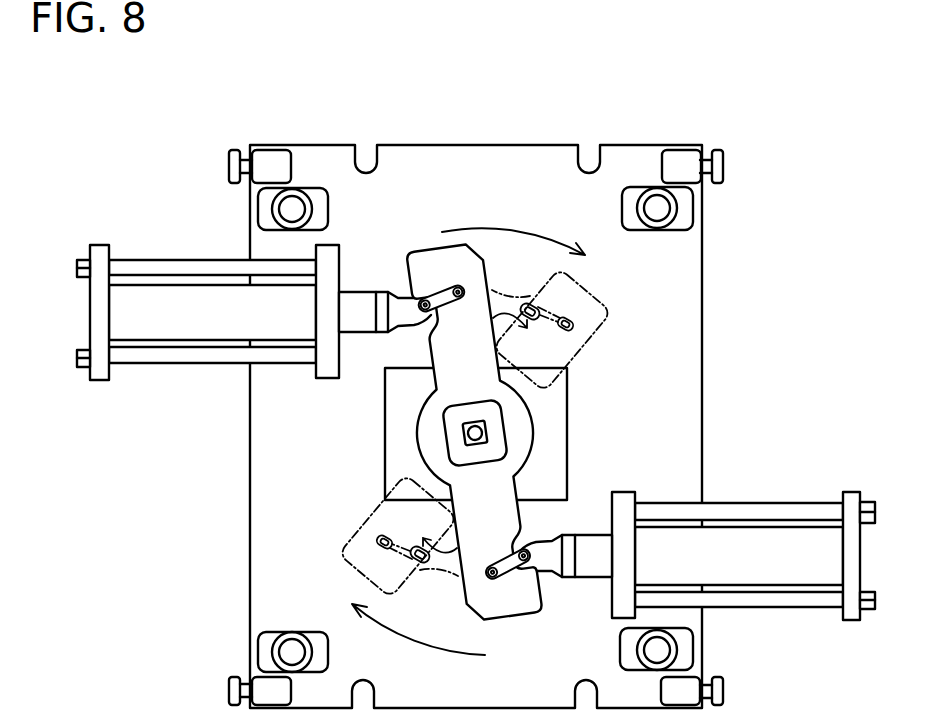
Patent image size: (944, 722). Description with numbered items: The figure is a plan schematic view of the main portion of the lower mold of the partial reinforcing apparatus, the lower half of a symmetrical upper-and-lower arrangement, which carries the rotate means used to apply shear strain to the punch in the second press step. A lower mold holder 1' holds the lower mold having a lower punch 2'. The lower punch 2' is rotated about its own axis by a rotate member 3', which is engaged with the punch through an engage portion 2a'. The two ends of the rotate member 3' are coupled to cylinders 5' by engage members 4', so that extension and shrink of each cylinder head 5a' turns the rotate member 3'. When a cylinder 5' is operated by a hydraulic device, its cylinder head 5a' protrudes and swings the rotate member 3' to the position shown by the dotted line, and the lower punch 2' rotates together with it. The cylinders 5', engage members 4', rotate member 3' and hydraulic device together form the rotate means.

The lower mold holder 1' is at (505, 426).
The lower punch 2' is at (571, 432).
The engage portion 2a' is at (606, 401).
The rotate member 3' is at (546, 429).
The engage member 4' is at (475, 390).
The cylinder 5' is at (476, 424).
The cylinder head 5a' is at (475, 443).